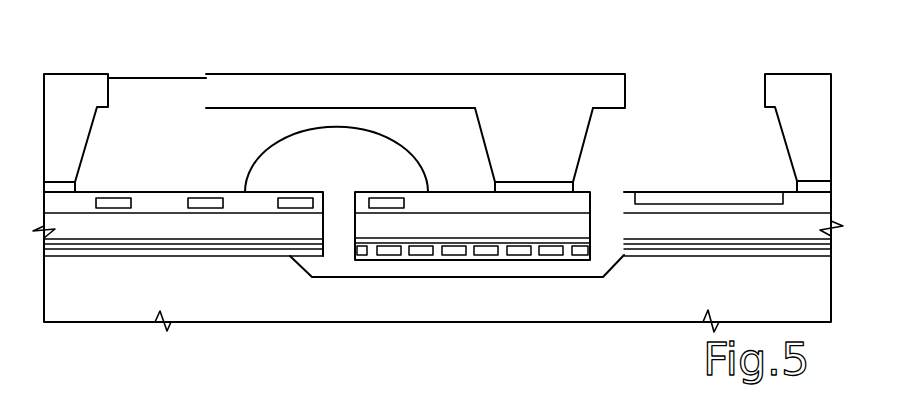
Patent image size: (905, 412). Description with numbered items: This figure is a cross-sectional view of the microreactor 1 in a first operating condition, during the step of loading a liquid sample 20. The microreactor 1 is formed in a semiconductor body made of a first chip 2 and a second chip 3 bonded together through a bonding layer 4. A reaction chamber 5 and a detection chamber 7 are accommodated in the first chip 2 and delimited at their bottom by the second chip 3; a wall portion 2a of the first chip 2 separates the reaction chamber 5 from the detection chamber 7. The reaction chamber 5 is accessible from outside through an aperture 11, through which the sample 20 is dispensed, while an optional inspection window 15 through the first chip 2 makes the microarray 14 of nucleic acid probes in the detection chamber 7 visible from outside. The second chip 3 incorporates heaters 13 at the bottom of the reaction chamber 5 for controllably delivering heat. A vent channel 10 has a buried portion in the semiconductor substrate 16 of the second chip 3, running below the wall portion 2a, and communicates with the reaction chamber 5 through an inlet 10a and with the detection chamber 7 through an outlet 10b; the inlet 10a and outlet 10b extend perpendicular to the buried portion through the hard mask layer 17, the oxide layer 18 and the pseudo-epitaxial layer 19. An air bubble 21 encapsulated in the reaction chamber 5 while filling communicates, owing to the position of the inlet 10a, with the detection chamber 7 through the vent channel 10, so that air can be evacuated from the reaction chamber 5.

The microreactor 1 is at (808, 39).
The first chip 2 is at (457, 133).
The wall portion 2a is at (534, 105).
The second chip 3 is at (438, 272).
The bonding layer 4 is at (77, 186).
The reaction chamber 5 is at (336, 117).
The detection chamber 7 is at (442, 105).
The vent channel 10 is at (472, 271).
The inlet 10a is at (305, 173).
The outlet 10b is at (635, 175).
The aperture 11 is at (149, 54).
The heater 13 is at (203, 199).
The microarray 14 is at (700, 193).
The inspection window 15 is at (757, 64).
The semiconductor substrate 16 is at (82, 315).
The hard mask layer 17 is at (212, 254).
The oxide layer 18 is at (250, 242).
The pseudo-epitaxial layer 19 is at (242, 224).
The liquid sample 20 is at (165, 102).
The air bubble 21 is at (362, 128).